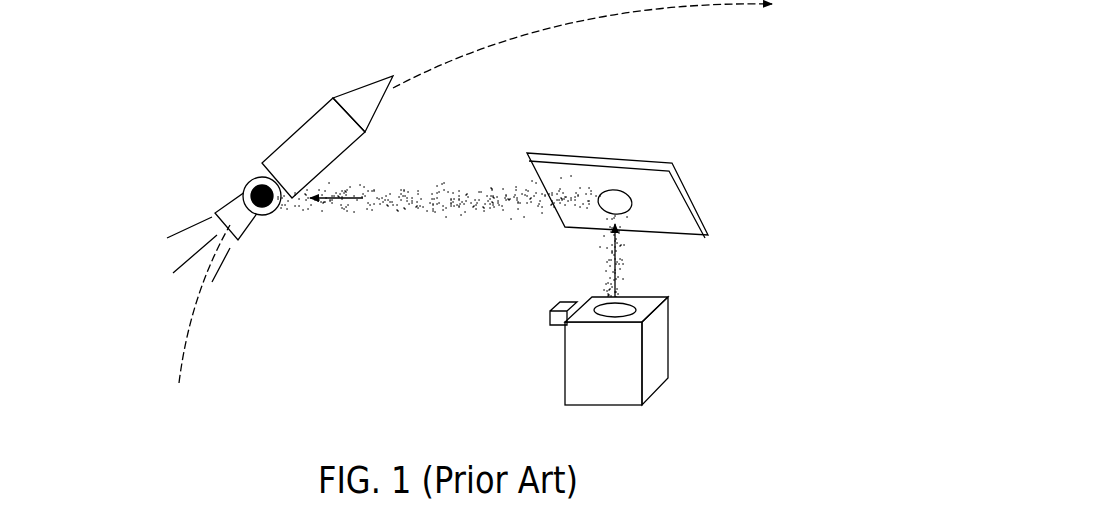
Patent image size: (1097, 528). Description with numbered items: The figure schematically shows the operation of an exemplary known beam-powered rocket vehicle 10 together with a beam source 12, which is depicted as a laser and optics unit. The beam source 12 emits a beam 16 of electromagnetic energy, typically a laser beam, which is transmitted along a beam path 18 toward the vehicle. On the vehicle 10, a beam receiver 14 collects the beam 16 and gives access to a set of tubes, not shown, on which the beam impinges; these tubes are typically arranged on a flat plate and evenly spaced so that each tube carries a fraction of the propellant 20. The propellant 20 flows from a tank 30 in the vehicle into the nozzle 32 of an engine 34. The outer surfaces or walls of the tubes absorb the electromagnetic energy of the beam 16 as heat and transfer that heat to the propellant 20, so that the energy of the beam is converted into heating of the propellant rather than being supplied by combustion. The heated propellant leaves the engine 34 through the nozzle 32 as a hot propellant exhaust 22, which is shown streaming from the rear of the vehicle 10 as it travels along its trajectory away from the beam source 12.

The beam-powered rocket vehicle 10 is at (300, 124).
The beam source 12 is at (668, 335).
The beam receiver 14 is at (242, 194).
The beam 16 is at (363, 213).
The beam path 18 is at (457, 164).
The propellant 20 is at (330, 154).
The hot propellant exhaust 22 is at (220, 272).
The tank 30 is at (287, 155).
The nozzle 32 is at (211, 220).
The engine 34 is at (247, 228).